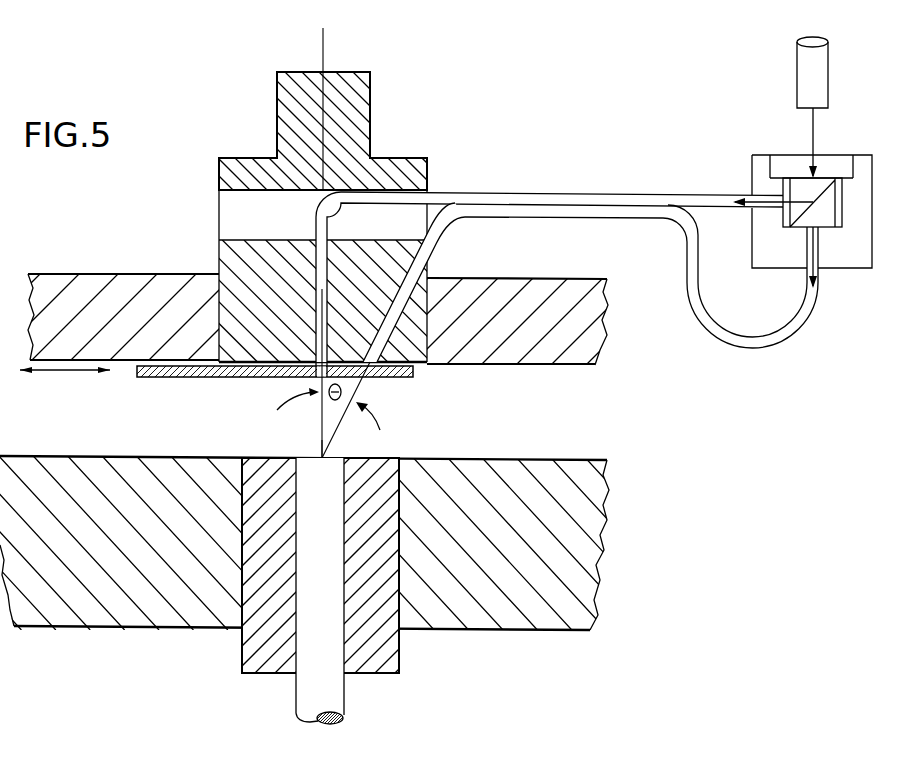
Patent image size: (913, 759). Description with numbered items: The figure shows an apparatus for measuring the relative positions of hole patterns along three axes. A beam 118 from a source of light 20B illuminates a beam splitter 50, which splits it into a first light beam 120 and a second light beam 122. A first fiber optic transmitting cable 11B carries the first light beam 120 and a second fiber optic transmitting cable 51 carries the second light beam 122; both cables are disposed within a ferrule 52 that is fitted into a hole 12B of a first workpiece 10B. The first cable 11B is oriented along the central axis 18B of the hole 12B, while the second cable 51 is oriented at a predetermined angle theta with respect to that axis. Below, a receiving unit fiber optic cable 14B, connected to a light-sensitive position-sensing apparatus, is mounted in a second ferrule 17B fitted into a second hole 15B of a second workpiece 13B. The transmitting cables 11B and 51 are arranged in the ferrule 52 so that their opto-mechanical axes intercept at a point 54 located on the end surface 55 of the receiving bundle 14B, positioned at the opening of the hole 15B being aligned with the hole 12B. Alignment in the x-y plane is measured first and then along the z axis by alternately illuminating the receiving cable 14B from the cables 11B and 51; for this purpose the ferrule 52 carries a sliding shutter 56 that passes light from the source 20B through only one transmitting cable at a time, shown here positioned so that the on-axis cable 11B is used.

The first workpiece 10B is at (528, 278).
The first fiber optic transmitting cable 11B is at (533, 192).
The hole of first workpiece 12B is at (218, 268).
The second workpiece 13B is at (586, 459).
The receiving unit fiber optic cable 14B is at (345, 692).
The second hole 15B is at (399, 458).
The second ferrule 17B is at (242, 638).
The central axis 18B is at (326, 45).
The source of light 20B is at (797, 72).
The beam splitter 50 is at (795, 157).
The second fiber optic transmitting cable 51 is at (748, 350).
The ferrule 52 is at (256, 157).
The point 54 is at (320, 457).
The end surface 55 is at (340, 457).
The sliding shutter 56 is at (200, 378).
The beam 118 is at (810, 118).
The first light beam 120 is at (752, 193).
The second light beam 122 is at (806, 272).